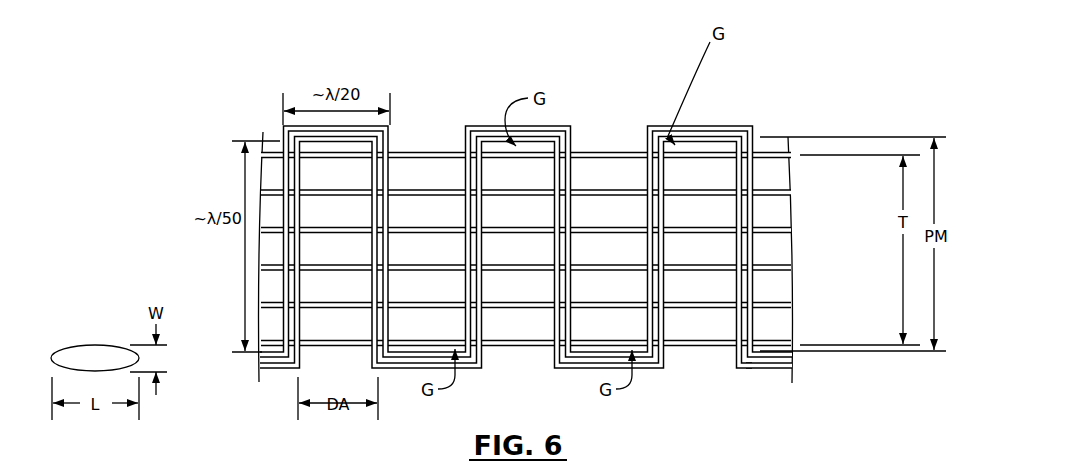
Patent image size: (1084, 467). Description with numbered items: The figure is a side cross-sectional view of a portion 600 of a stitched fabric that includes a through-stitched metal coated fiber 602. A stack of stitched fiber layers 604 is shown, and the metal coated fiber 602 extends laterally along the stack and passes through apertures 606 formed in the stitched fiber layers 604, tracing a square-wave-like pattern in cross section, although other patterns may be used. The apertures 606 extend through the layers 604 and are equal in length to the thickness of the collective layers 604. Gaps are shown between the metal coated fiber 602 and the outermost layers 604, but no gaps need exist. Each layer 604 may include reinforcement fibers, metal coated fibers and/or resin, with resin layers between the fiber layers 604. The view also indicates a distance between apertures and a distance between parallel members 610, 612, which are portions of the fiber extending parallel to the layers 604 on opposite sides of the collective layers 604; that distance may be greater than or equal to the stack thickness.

The portion of a stitched fabric 600 is at (225, 33).
The metal coated fiber 602 is at (756, 127).
The stitched fiber layers 604 is at (776, 165).
The apertures 606 is at (393, 152).
The parallel member 610 is at (698, 130).
The parallel member 612 is at (763, 370).